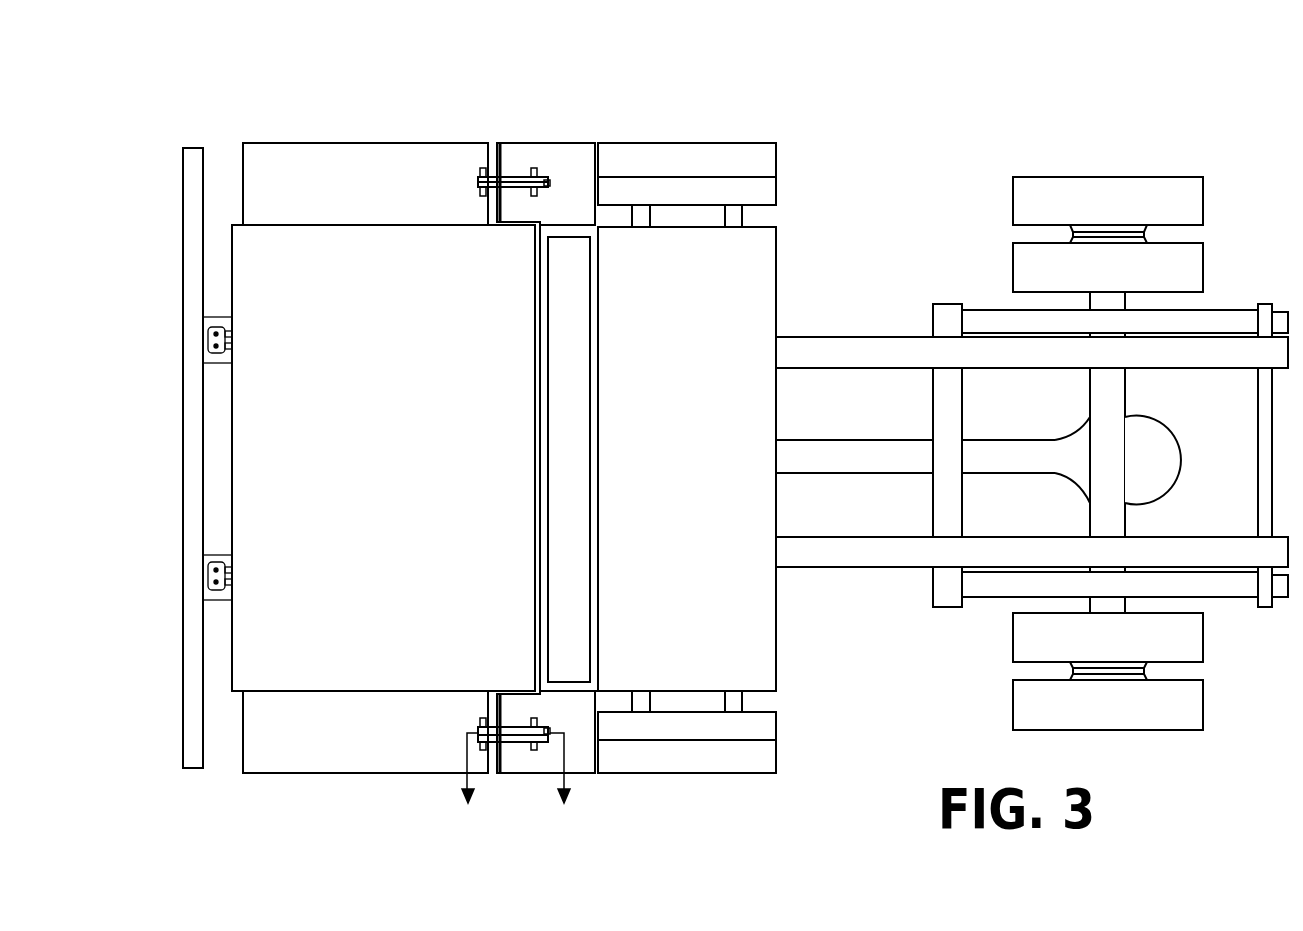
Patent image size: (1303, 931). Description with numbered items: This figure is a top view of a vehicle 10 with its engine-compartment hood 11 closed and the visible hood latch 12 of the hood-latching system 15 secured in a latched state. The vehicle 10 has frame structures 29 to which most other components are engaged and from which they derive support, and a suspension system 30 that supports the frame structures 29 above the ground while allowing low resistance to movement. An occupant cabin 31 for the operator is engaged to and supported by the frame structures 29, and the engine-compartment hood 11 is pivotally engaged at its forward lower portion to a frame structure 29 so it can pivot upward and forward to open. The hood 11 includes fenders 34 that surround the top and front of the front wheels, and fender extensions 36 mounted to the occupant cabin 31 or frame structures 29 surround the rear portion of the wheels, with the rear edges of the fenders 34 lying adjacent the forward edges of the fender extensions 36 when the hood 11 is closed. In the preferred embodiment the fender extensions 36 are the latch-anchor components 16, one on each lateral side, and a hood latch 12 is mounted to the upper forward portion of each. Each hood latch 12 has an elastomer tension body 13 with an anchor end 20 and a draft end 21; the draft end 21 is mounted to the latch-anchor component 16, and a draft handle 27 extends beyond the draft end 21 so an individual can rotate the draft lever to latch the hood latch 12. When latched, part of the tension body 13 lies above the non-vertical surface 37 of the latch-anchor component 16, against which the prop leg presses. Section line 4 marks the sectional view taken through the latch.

The section line 4- 4 is at (519, 755).
The vehicle 10 is at (1032, 397).
The engine-compartment hood 11 is at (373, 280).
The hood latch 12 is at (520, 172).
The tension body 13 is at (500, 172).
The hood-latching system 15 is at (539, 190).
The latch-anchor component 16 is at (536, 172).
The anchor end 20 is at (481, 168).
The draft end 21 is at (550, 189).
The draft handle 27 is at (548, 183).
The frame structure 29 is at (878, 352).
The suspension system 30 is at (1232, 318).
The occupant cabin 31 is at (737, 270).
The fender 34 is at (325, 165).
The fender extension 36 is at (546, 178).
The non-vertical surface 37 is at (520, 208).